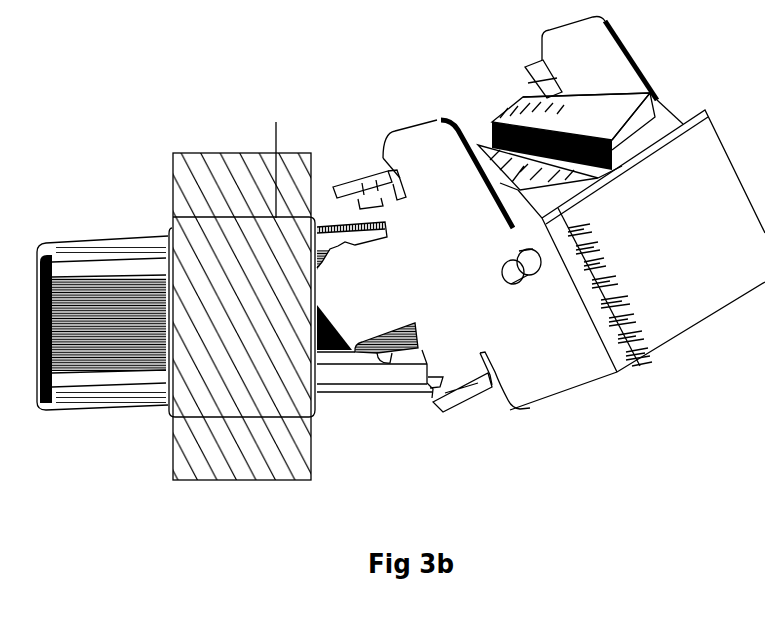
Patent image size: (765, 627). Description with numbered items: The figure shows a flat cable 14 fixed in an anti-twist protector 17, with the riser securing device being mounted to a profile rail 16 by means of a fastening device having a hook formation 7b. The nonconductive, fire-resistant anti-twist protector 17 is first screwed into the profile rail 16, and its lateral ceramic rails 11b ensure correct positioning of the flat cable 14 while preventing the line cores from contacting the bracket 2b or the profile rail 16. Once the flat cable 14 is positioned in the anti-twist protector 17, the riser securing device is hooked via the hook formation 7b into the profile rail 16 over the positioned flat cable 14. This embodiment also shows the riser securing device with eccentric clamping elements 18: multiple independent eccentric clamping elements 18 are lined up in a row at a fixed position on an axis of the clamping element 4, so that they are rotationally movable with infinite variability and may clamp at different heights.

The profile rail 16 is at (100, 260).
The flat cable 14 is at (210, 160).
The lateral ceramic rails 11b is at (171, 228).
The anti-twist protector 17 is at (271, 158).
The hook formation 7b is at (363, 310).
The bracket 2b is at (670, 295).
The eccentric clamping elements 18 is at (570, 118).
The axis of the clamping element 4 is at (533, 270).